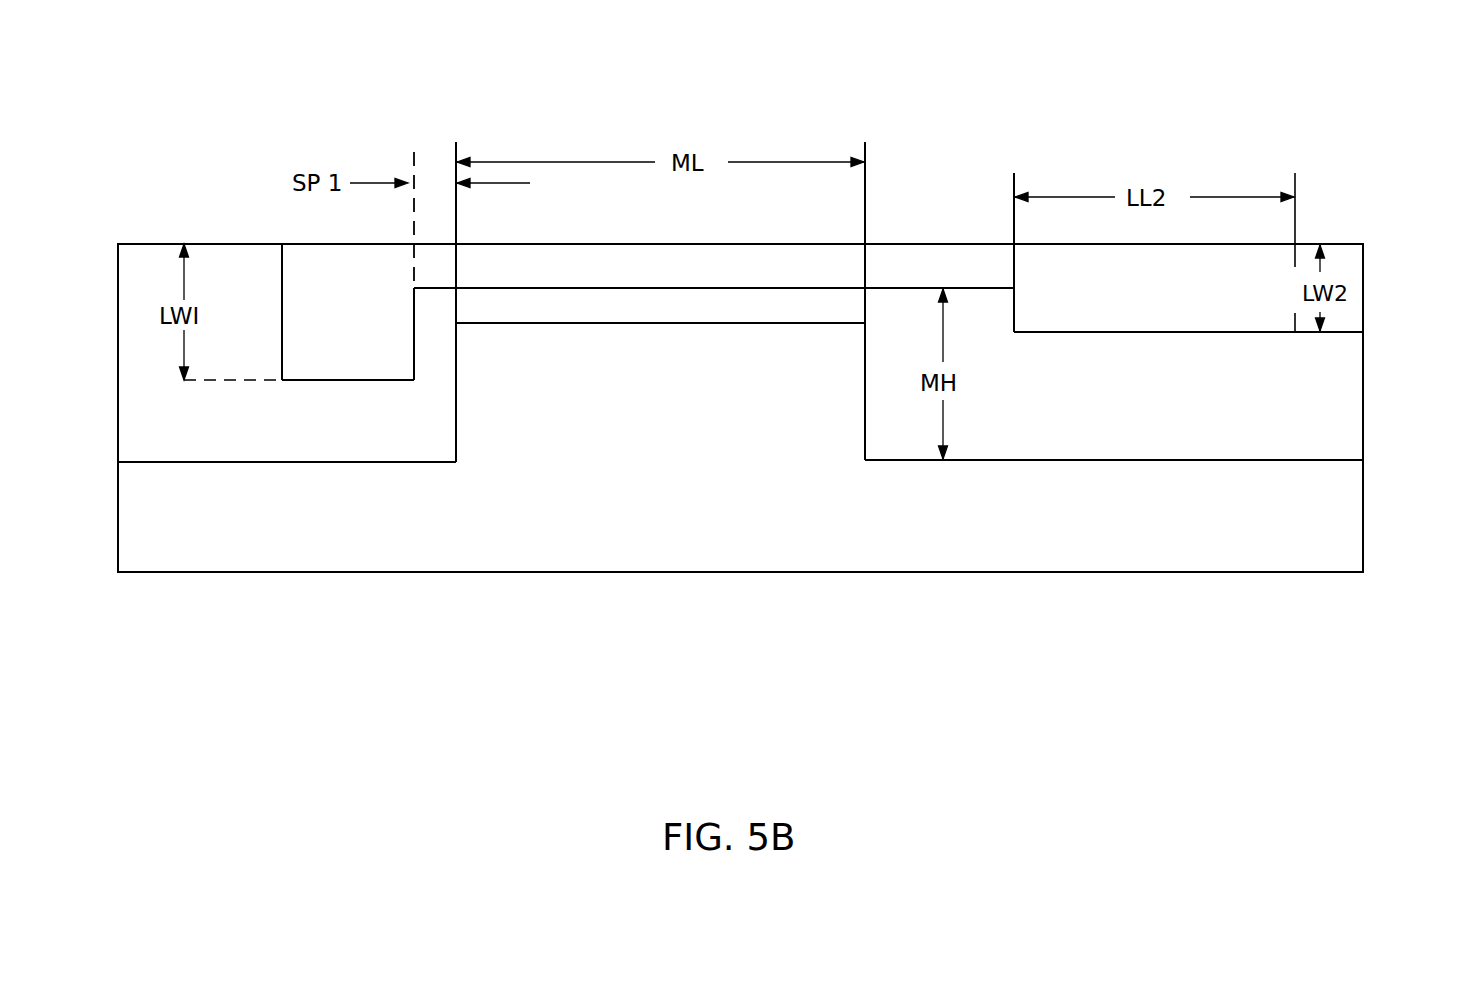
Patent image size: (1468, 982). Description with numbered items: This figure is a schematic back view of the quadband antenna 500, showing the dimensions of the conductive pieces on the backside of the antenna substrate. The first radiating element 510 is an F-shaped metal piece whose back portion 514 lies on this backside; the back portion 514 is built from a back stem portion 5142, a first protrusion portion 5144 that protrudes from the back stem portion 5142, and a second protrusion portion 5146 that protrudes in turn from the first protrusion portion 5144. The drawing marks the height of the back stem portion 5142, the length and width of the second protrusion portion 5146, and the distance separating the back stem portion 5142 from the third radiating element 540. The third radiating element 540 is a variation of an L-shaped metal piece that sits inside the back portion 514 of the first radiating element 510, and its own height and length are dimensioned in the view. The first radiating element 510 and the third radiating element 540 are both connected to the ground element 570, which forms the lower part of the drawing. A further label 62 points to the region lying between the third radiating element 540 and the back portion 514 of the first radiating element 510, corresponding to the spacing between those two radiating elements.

The quadband antenna 500 is at (1177, 115).
The first radiating element 510 is at (1267, 267).
The back portion 514 is at (1053, 308).
The back stem portion 5142 is at (543, 433).
The first protrusion portion 5144 is at (930, 269).
The second protrusion portion 5146 is at (1178, 302).
The third radiating element 540 is at (503, 413).
The ground element 570 is at (1283, 519).
The membrane layer 62 is at (667, 315).